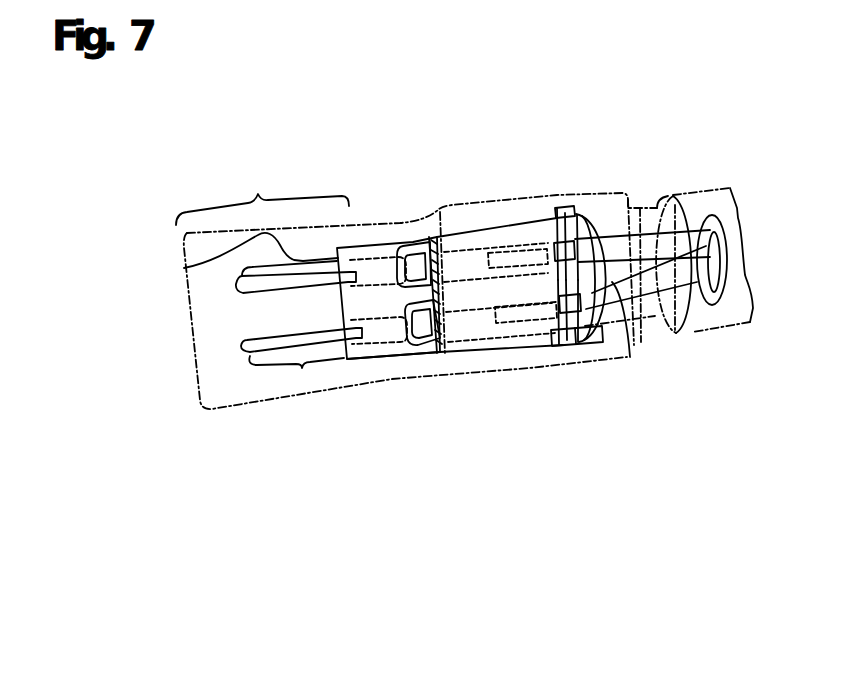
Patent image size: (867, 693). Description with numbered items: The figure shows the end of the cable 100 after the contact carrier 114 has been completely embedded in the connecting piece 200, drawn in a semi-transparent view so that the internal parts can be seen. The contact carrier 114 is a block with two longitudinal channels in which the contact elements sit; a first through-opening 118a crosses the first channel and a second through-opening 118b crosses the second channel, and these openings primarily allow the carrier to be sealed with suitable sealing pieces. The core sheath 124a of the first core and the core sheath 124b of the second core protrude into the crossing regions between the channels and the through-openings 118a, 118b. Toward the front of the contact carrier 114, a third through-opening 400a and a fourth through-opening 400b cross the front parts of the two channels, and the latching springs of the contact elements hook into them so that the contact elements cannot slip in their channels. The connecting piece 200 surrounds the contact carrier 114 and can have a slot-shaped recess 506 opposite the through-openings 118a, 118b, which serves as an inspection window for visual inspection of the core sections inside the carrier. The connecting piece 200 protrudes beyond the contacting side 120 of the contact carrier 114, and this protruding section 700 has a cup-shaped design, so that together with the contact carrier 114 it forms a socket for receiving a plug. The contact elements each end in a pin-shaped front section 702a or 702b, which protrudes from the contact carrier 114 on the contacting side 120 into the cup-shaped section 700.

The cable 100 is at (553, 118).
The contact carrier 114 is at (370, 242).
The first through-opening 118a is at (555, 205).
The second through-opening 118b is at (570, 346).
The contacting side 120 is at (331, 359).
The core sheath of the first core 124a is at (568, 212).
The core sheath of the second core 124b is at (585, 343).
The connecting piece 200 is at (612, 193).
The third through-opening 400a is at (415, 242).
The fourth through-opening 400b is at (437, 352).
The slot-shaped recess 506 is at (630, 357).
The cup-shaped section of the connecting piece 700 is at (257, 195).
The pin-shaped front section 702a is at (184, 267).
The pin-shaped front section 702b is at (302, 368).